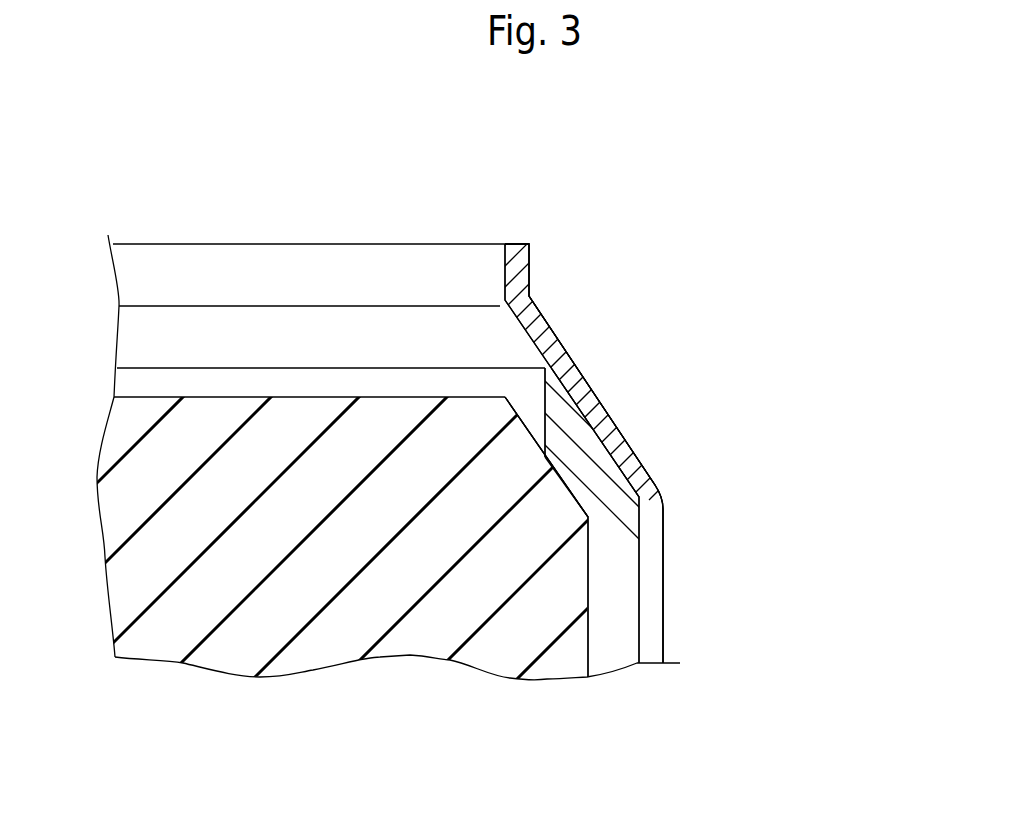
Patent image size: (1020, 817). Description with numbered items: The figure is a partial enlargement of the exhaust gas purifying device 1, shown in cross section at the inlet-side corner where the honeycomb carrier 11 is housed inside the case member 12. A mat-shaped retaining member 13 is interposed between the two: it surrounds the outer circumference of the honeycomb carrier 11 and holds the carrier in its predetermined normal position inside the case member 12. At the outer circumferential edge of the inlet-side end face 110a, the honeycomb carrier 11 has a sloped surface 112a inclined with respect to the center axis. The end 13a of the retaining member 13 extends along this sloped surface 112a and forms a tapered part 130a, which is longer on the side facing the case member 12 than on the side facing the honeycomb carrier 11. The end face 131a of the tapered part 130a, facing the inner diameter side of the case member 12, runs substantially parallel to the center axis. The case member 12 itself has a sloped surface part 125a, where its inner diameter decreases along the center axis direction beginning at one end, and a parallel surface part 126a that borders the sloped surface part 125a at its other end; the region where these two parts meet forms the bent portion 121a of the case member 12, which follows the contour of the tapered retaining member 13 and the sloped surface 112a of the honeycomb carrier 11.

The exhaust gas purifying device 1 is at (542, 180).
The honeycomb carrier 11 is at (415, 638).
The inlet-side end face 110a is at (146, 390).
The case member 12 is at (650, 665).
The bent portion of case member 121a is at (625, 220).
The sloped surface part 125a is at (553, 447).
The parallel surface part 126a is at (530, 272).
The sloped surface 112a is at (628, 447).
The retaining member 13 is at (605, 660).
The end of retaining member 13a is at (546, 457).
The tapered part 130a is at (582, 478).
The end face of tapered part 131a is at (534, 398).